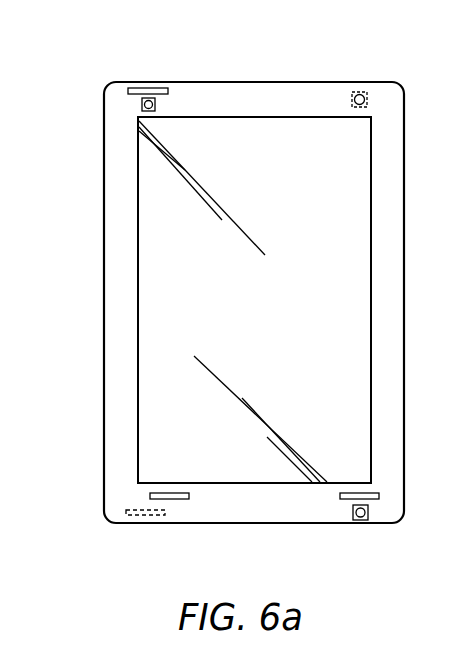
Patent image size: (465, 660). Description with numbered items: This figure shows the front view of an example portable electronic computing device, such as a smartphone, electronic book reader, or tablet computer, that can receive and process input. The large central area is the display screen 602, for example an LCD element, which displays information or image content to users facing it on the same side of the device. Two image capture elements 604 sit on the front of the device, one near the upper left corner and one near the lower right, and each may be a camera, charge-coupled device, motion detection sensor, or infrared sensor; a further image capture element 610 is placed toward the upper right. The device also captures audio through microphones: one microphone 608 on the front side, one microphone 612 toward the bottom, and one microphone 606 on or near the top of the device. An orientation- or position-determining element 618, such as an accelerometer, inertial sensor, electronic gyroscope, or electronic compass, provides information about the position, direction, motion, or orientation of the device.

The display screen 602 is at (139, 357).
The image capture element 604 is at (142, 107).
The microphone 606 is at (155, 88).
The microphone 608 is at (379, 496).
The image capture element 610 is at (357, 92).
The microphone 612 is at (177, 499).
The orientation- or position-determining element 618 is at (145, 515).